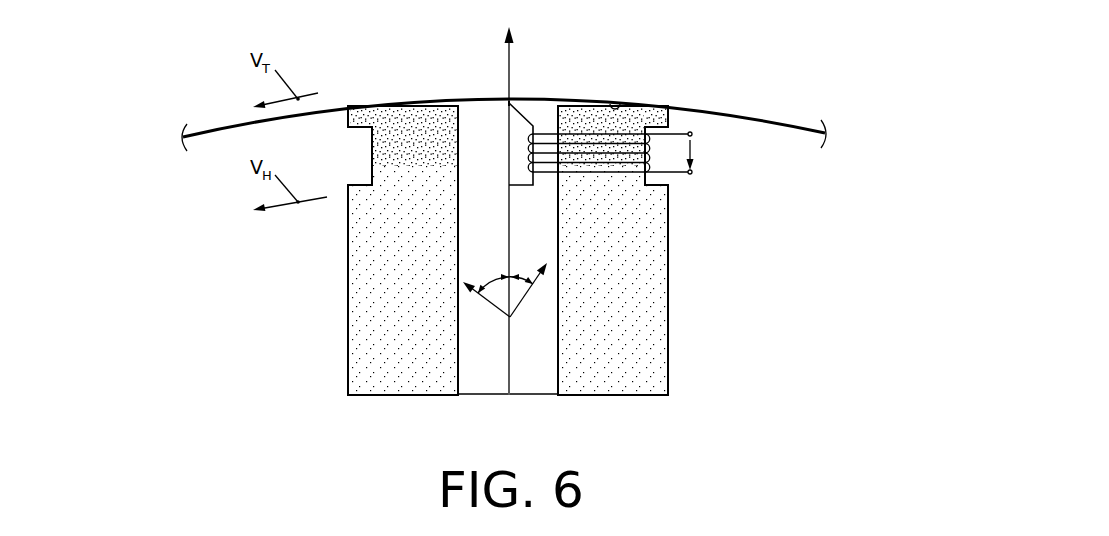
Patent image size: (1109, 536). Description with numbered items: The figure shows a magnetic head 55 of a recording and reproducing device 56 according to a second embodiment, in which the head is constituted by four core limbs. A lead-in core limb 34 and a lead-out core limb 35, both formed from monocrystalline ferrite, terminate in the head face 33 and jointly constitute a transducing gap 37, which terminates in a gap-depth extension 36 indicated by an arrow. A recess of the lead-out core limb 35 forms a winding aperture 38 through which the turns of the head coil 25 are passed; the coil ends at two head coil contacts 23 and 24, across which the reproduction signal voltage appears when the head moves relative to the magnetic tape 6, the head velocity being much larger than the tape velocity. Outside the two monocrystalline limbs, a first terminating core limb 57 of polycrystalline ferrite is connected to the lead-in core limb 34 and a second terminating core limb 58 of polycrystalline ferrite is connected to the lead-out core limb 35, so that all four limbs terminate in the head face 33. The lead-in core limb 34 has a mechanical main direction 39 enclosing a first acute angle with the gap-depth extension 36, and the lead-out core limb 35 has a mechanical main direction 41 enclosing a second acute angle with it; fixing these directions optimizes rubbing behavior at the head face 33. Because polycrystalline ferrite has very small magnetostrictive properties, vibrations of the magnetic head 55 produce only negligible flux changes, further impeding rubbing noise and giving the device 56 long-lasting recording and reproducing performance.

The magnetic tape 6 is at (743, 118).
The head coil contact 23 is at (692, 135).
The head coil contact 24 is at (692, 174).
The head coil 25 is at (553, 172).
The head face 33 is at (627, 105).
The lead-in core limb 34 is at (485, 387).
The lead-out core limb 35 is at (527, 388).
The gap-depth extension 36 is at (509, 72).
The transducing gap 37 is at (509, 103).
The winding aperture 38 is at (517, 153).
The mechanical main direction 39 is at (497, 307).
The mechanical main direction 41 is at (518, 302).
The magnetic head 55 is at (528, 244).
The recording and reproducing device 56 is at (504, 78).
The first terminating core limb 57 is at (367, 353).
The second terminating core limb 58 is at (653, 327).